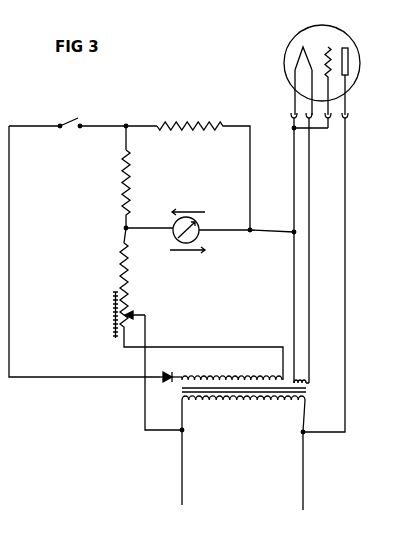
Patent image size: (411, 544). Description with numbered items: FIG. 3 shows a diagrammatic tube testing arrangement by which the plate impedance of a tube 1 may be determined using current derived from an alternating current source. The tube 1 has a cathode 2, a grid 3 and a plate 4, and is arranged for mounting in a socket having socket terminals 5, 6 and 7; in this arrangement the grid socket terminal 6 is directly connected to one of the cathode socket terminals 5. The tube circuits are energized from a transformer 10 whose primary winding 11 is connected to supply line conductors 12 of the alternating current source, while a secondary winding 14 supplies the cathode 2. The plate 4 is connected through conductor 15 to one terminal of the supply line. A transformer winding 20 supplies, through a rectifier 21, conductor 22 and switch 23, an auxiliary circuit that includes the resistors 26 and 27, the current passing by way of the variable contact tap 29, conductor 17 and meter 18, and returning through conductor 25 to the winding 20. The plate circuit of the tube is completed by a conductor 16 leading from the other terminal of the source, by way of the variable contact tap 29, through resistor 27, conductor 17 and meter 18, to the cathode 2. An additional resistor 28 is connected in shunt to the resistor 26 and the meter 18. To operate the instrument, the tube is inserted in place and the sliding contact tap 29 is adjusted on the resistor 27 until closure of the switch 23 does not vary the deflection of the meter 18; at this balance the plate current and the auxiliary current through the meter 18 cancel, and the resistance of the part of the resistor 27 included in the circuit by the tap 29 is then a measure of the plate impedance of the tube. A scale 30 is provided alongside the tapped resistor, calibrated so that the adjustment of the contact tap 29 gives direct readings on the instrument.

The tube 1 is at (355, 78).
The cathode 2 is at (295, 70).
The grid 3 is at (331, 47).
The plate 4 is at (348, 62).
The cathode socket terminal 5 is at (297, 122).
The grid socket terminal 6 is at (332, 123).
The socket terminal 7 is at (348, 118).
The transformer 10 is at (253, 397).
The primary winding 11 is at (264, 400).
The supply line conductors 12 is at (183, 462).
The secondary winding 14 is at (306, 381).
The conductor 15 is at (340, 412).
The conductor 16 is at (146, 406).
The conductor 17 is at (146, 228).
The meter 18 is at (196, 226).
The transformer winding 20 is at (232, 370).
The rectifier 21 is at (168, 362).
The conductor 22 is at (10, 270).
The switch 23 is at (70, 121).
The conductor 25 is at (257, 338).
The resistor 26 is at (128, 165).
The resistor 27 is at (130, 257).
The additional resistor 28 is at (207, 130).
The variable contact tap 29 is at (137, 312).
The scale 30 is at (112, 320).